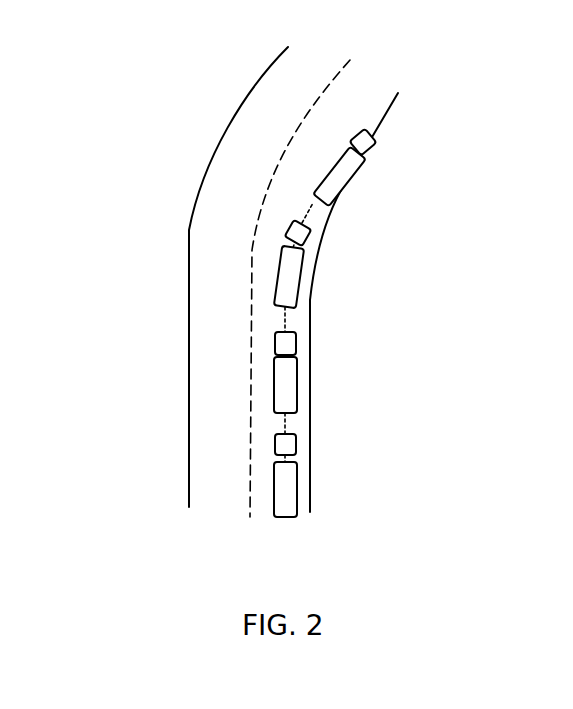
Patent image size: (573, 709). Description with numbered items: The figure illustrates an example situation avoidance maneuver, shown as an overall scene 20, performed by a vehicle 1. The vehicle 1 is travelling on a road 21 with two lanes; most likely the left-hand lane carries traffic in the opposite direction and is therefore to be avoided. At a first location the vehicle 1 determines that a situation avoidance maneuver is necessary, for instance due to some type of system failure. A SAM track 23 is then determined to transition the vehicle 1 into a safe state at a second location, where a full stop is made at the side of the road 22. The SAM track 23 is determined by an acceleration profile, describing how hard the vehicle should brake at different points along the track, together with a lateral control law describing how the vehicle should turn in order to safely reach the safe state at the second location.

The road / driving scene 20 is at (106, 79).
The road 21 is at (188, 285).
The side of the road 22 is at (387, 122).
The situation avoidance maneuver (SAM) track 23 is at (285, 318).
The vehicle 1 is at (274, 471).